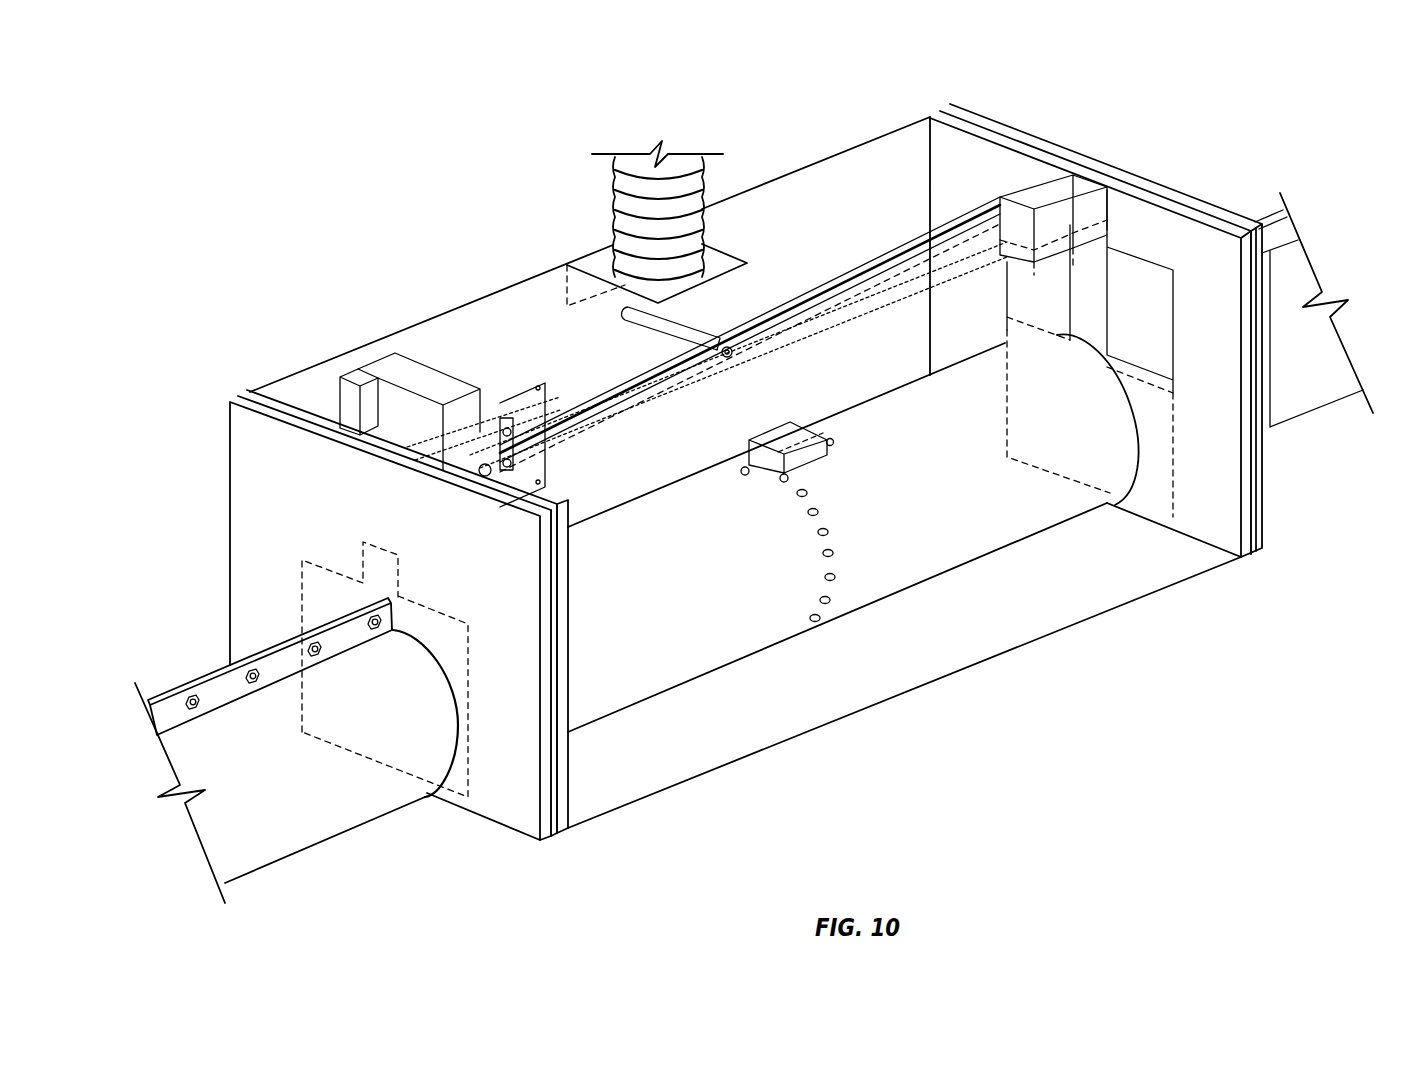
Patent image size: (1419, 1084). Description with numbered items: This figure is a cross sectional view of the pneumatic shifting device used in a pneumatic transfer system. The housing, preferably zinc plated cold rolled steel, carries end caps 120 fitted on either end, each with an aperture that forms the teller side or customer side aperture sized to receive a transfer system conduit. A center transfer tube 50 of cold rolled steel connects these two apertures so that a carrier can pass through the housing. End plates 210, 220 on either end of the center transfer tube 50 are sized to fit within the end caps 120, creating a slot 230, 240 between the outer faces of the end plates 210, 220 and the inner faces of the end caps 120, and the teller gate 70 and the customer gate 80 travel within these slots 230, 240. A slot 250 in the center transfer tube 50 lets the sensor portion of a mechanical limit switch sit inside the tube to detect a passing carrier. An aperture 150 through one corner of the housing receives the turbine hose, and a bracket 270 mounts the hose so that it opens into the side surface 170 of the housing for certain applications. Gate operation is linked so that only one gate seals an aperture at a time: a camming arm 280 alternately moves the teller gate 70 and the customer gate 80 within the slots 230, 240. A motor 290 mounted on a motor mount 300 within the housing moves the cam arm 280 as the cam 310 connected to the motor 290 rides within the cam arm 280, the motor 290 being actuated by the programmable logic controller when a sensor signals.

The center transfer tube 50 is at (955, 562).
The teller gate 70 is at (315, 607).
The customer gate 80 is at (1118, 253).
The end caps 120 is at (240, 398).
The aperture 150 is at (565, 284).
The side surface 170 is at (840, 167).
The end plate 210 is at (567, 745).
The end plate 220 is at (1254, 545).
The slot 230 is at (567, 832).
The slot 240 is at (1256, 508).
The slot 250 is at (750, 463).
The bracket 270 is at (607, 263).
The camming arm 280 is at (892, 295).
The motor 290 is at (427, 388).
The motor mount 300 is at (357, 375).
The cam 310 is at (505, 435).